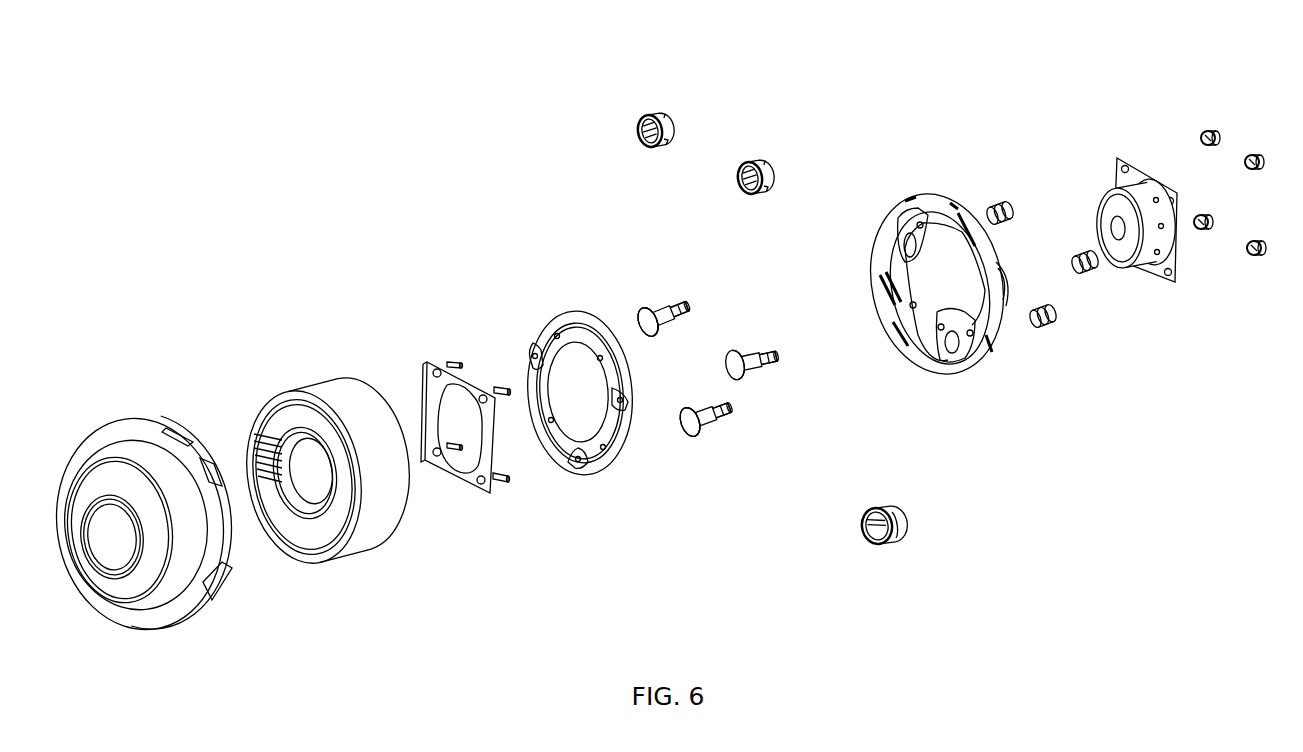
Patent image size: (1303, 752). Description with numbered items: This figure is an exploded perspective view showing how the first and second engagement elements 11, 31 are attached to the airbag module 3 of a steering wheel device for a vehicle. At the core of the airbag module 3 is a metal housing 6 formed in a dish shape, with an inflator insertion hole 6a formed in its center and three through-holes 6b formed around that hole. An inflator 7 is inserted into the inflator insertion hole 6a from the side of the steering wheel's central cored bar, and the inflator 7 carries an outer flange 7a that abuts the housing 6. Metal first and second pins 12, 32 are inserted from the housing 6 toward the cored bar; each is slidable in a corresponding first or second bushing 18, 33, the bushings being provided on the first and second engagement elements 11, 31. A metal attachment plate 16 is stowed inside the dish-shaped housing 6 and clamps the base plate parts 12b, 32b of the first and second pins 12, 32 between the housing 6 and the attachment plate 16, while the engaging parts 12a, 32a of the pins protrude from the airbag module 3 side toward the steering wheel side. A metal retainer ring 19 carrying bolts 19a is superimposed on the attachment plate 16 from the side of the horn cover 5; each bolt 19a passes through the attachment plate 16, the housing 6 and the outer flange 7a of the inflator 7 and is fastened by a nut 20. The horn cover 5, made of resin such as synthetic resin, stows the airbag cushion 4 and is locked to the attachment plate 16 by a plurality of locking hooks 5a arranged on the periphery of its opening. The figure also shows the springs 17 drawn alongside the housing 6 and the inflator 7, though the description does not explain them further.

The airbag module 3 is at (535, 117).
The airbag cushion 4 is at (318, 393).
The horn cover 5 is at (129, 406).
The locking hooks 5a is at (211, 462).
The housing 6 is at (909, 186).
The inflator insertion hole 6a is at (938, 332).
The through-holes 6b is at (930, 208).
The inflator 7 is at (1177, 296).
The outer flange 7a is at (1133, 168).
The first engagement element 11 is at (933, 584).
The first pin 12 is at (702, 458).
The engaging part 12a is at (742, 410).
The base plate part 12b is at (681, 440).
The attachment plate 16 is at (575, 475).
The spring 17 is at (1004, 200).
The first bushing 18 is at (898, 520).
The retainer ring 19 is at (457, 494).
The bolts 19a is at (499, 487).
The nut 20 is at (1259, 258).
The second engagement element 31 is at (757, 139).
The second pin 32 is at (634, 299).
The engaging part 32a is at (688, 304).
The base plate part 32b is at (648, 336).
The second bushing 33 is at (650, 116).